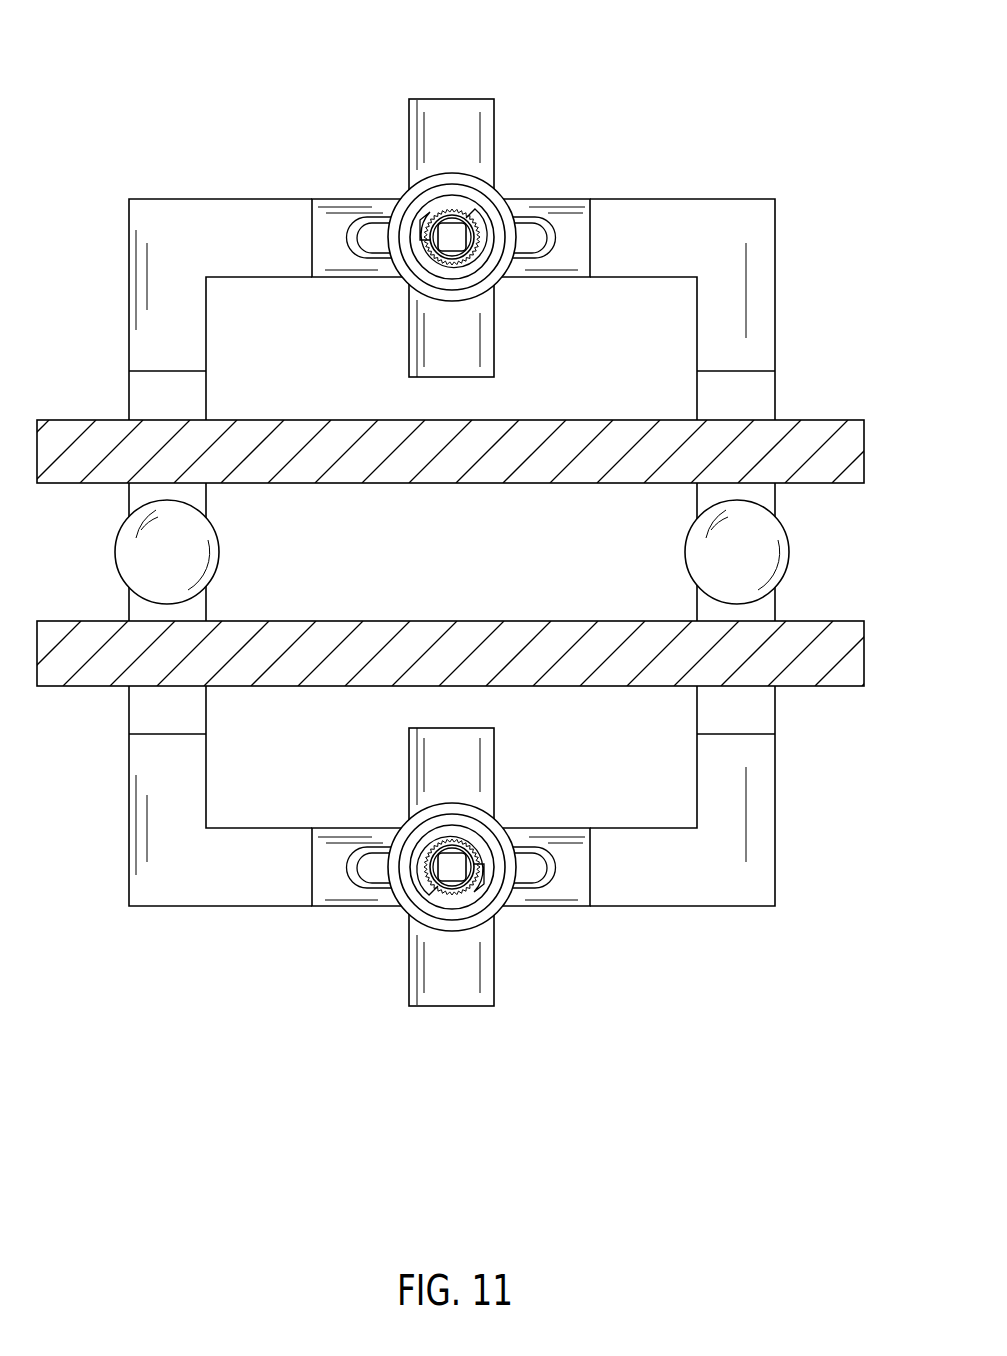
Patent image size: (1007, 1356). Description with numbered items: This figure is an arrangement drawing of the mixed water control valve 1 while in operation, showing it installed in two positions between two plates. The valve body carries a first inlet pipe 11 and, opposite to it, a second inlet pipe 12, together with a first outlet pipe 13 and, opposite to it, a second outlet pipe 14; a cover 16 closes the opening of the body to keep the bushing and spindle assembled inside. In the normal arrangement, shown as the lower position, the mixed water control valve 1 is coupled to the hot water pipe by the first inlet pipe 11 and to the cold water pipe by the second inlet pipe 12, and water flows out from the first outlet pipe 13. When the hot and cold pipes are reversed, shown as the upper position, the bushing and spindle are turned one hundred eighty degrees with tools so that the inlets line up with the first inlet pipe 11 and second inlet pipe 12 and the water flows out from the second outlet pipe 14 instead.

The mixed water control valve 1 is at (343, 985).
The first inlet pipe 11 is at (312, 235).
The second inlet pipe 12 is at (592, 237).
The first outlet pipe 13 is at (452, 1007).
The second outlet pipe 14 is at (443, 98).
The cover 16 is at (498, 185).